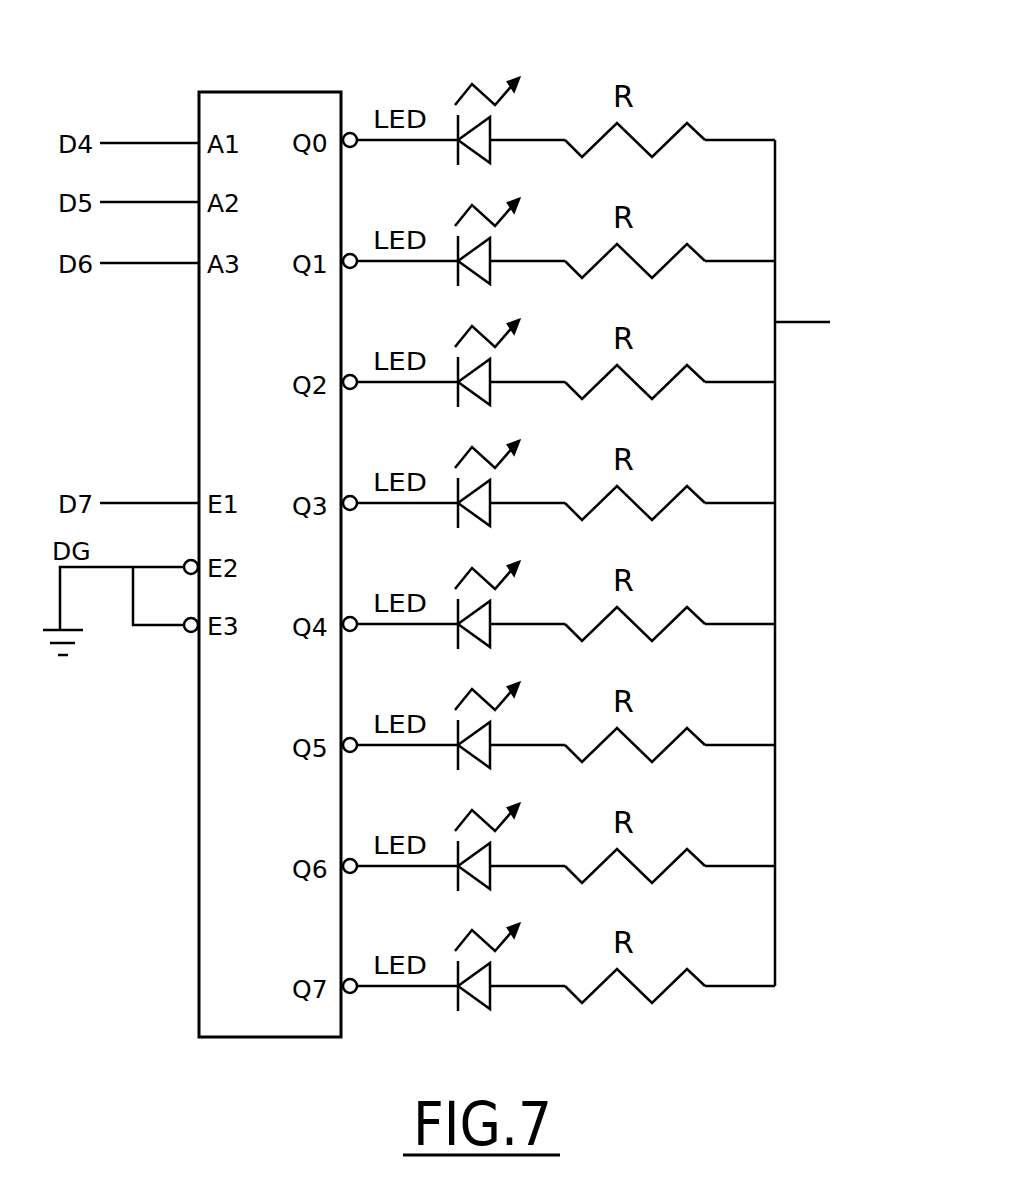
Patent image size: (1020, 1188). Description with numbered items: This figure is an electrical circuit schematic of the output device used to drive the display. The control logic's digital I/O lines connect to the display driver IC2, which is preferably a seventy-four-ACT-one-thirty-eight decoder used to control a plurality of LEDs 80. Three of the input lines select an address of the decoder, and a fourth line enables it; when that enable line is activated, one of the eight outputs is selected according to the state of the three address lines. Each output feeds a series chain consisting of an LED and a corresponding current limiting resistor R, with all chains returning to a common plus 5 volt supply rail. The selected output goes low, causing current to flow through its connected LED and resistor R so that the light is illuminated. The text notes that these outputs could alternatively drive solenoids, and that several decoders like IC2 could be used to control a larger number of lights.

The LEDs 80 is at (487, 79).
The display driver IC2 is at (270, 564).
The element LED is at (446, 242).
The current limiting resistor R is at (635, 239).
The +5 volt supply 5 is at (829, 320).